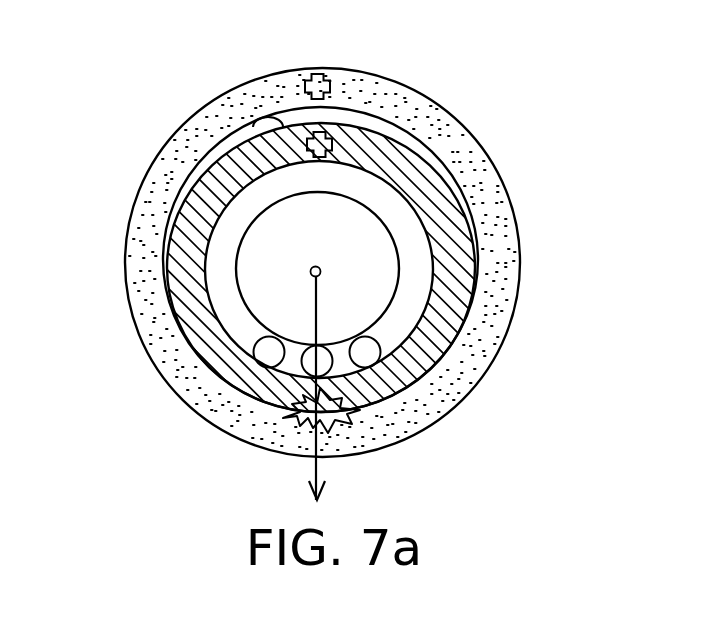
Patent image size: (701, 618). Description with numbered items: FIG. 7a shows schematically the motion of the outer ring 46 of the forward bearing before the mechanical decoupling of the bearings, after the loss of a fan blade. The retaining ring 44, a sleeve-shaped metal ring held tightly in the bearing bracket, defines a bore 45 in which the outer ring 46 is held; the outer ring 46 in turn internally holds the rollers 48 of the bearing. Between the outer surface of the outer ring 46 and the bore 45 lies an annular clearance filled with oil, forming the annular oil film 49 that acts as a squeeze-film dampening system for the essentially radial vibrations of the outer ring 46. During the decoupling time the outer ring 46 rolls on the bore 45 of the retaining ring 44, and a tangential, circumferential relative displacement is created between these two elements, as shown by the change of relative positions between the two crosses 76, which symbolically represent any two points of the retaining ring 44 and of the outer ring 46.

The retaining ring 44 is at (140, 282).
The bore 45 is at (254, 127).
The outer ring 46 is at (430, 182).
The rollers 48 is at (265, 355).
The annular oil film 49 is at (387, 128).
The crosses 76 is at (331, 140).